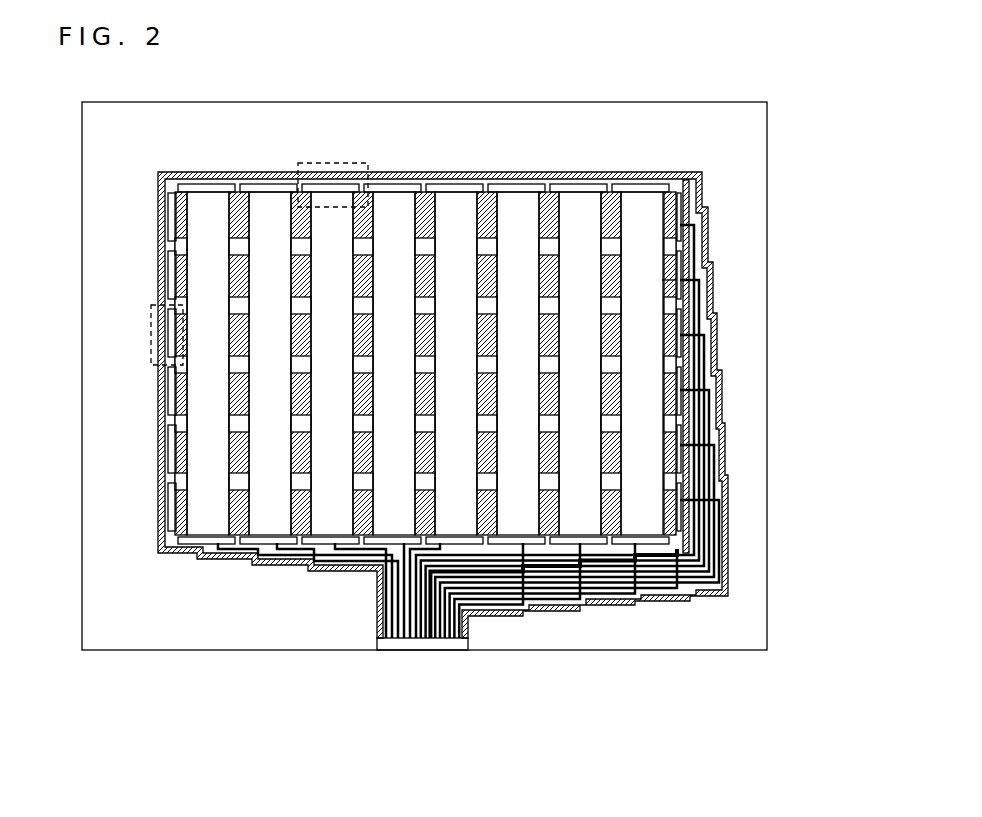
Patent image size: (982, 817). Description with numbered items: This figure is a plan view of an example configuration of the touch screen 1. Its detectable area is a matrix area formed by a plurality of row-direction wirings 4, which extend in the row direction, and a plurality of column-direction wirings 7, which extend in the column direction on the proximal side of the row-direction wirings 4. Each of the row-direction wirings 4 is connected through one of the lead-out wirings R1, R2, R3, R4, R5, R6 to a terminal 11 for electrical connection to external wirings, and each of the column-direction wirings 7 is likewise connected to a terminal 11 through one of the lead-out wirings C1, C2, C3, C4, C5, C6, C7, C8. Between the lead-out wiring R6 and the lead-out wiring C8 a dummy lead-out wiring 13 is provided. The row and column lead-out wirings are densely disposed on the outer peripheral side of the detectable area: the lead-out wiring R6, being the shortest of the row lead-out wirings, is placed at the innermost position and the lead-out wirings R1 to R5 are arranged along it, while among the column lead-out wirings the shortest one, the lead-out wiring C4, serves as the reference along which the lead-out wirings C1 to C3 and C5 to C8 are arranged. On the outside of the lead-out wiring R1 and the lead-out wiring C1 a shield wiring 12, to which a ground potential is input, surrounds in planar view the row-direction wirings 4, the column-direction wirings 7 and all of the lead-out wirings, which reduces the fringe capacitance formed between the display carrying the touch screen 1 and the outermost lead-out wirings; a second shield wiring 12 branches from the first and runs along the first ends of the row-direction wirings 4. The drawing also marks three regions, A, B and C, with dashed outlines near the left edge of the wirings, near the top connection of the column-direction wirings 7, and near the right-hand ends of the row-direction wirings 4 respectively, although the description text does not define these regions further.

The touch screen 1 is at (108, 82).
The row-direction wirings 4 is at (173, 333).
The column-direction wirings 7 is at (270, 200).
The terminal 11 is at (423, 647).
The shield wiring 12 is at (693, 598).
The dummy lead-out wiring 13 is at (637, 560).
The lead-out wiring C1 is at (218, 552).
The lead-out wiring C2 is at (277, 558).
The lead-out wiring C3 is at (335, 563).
The lead-out wiring C4 is at (402, 568).
The lead-out wiring C5 is at (410, 580).
The lead-out wiring C6 is at (413, 598).
The lead-out wiring C7 is at (427, 608).
The lead-out wiring C8 is at (423, 617).
The lead-out wiring R1 is at (710, 222).
The lead-out wiring R2 is at (715, 292).
The lead-out wiring R3 is at (719, 350).
The lead-out wiring R4 is at (724, 418).
The lead-out wiring R5 is at (727, 472).
The lead-out wiring R6 is at (730, 527).
The region A is at (157, 336).
The region B is at (329, 172).
The region C is at (661, 282).